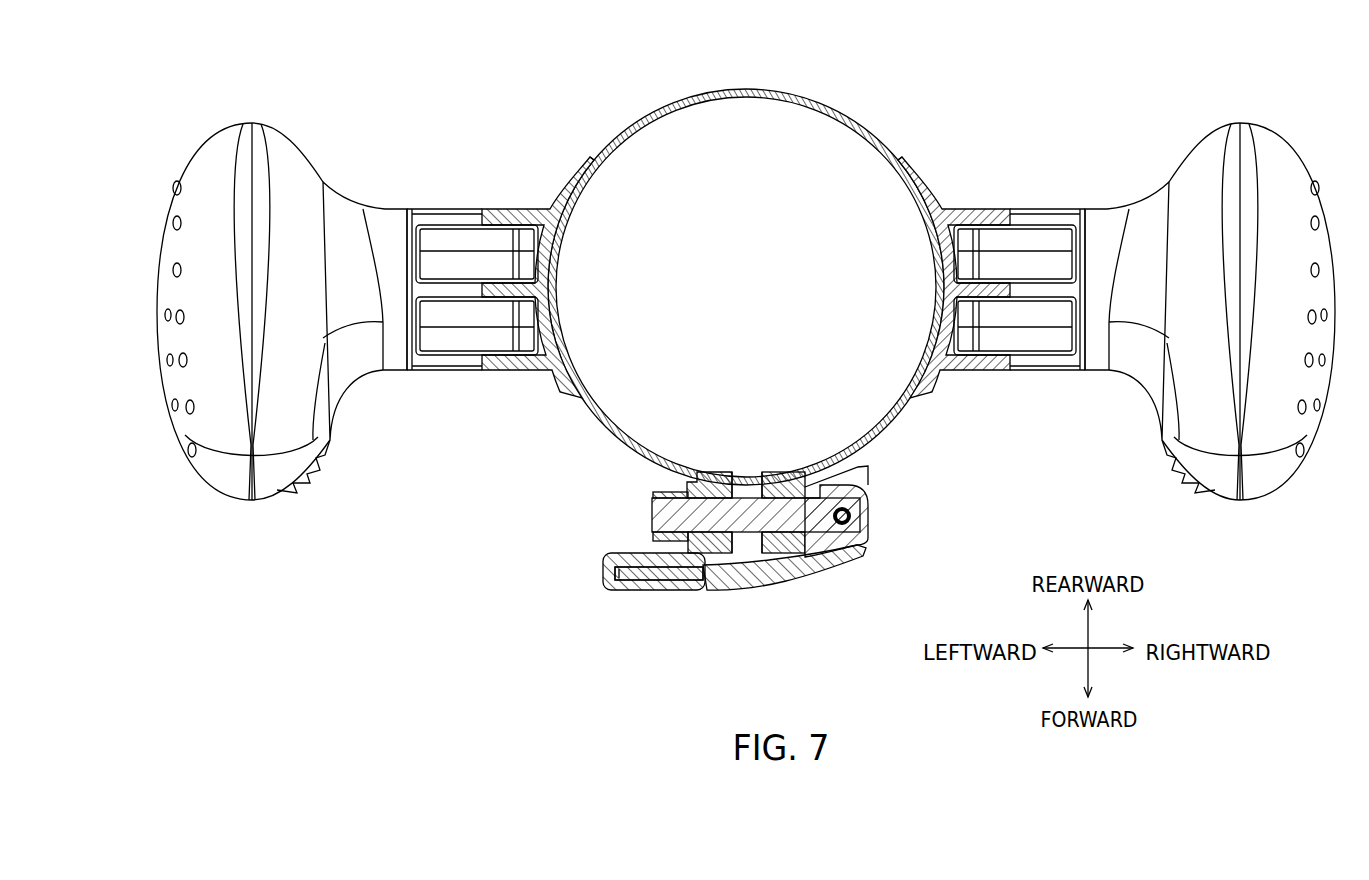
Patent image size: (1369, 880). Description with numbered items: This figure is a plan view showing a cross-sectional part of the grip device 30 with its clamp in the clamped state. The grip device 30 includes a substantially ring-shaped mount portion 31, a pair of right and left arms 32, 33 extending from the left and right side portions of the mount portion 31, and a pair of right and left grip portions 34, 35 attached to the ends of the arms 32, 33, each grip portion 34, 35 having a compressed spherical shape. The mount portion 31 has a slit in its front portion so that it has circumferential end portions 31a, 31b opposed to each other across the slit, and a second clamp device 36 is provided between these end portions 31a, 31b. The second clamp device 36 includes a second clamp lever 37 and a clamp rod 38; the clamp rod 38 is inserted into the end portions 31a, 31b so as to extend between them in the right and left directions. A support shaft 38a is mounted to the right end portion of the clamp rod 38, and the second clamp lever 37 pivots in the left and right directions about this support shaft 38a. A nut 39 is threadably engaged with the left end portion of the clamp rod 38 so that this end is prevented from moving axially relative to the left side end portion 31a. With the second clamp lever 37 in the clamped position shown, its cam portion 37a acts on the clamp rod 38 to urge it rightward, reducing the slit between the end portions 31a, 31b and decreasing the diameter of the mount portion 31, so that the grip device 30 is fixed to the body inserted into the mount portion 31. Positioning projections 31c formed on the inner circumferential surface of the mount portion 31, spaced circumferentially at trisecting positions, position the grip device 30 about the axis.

The grip device 30 is at (746, 344).
The mount portion 31 is at (702, 89).
The circumferential end portion 31a is at (705, 472).
The circumferential end portion 31b is at (757, 487).
The positioning projection 31c is at (588, 198).
The arm 32 is at (460, 240).
The arm 33 is at (1030, 240).
The grip portion 34 is at (218, 150).
The grip portion 35 is at (1273, 150).
The second clamp device 36 is at (729, 608).
The second clamp lever 37 is at (810, 580).
The cam portion 37a is at (842, 482).
The clamp rod 38 is at (752, 525).
The support shaft 38a is at (852, 516).
The nut 39 is at (652, 500).